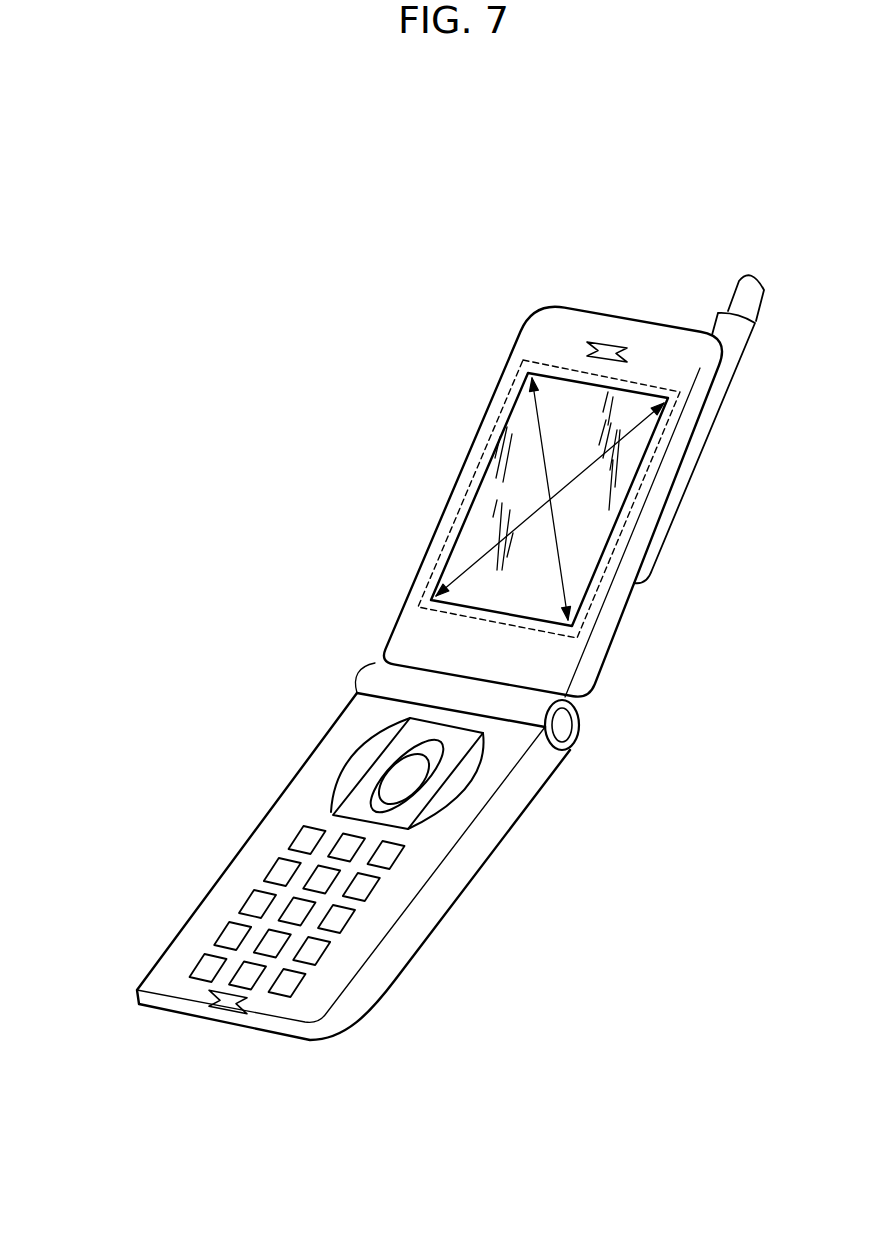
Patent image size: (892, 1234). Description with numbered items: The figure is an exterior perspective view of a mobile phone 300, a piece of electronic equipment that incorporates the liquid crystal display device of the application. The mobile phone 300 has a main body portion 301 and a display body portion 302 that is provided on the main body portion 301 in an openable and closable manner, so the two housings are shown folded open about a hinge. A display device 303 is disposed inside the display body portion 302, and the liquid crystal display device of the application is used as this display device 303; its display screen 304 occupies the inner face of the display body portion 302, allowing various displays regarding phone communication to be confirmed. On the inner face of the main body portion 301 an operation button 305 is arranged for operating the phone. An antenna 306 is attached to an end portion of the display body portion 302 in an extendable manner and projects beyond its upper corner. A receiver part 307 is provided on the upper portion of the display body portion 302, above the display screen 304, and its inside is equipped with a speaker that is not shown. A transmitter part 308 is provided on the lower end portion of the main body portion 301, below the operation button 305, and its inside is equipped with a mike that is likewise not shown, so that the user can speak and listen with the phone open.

The mobile phone 300 is at (57, 858).
The main body portion 301 is at (218, 900).
The display body portion 302 is at (626, 621).
The display device 303 is at (470, 484).
The display screen 304 is at (588, 522).
The operation button 305 is at (268, 943).
The antenna 306 is at (745, 286).
The receiver part 307 is at (608, 345).
The transmitter part 308 is at (222, 1010).